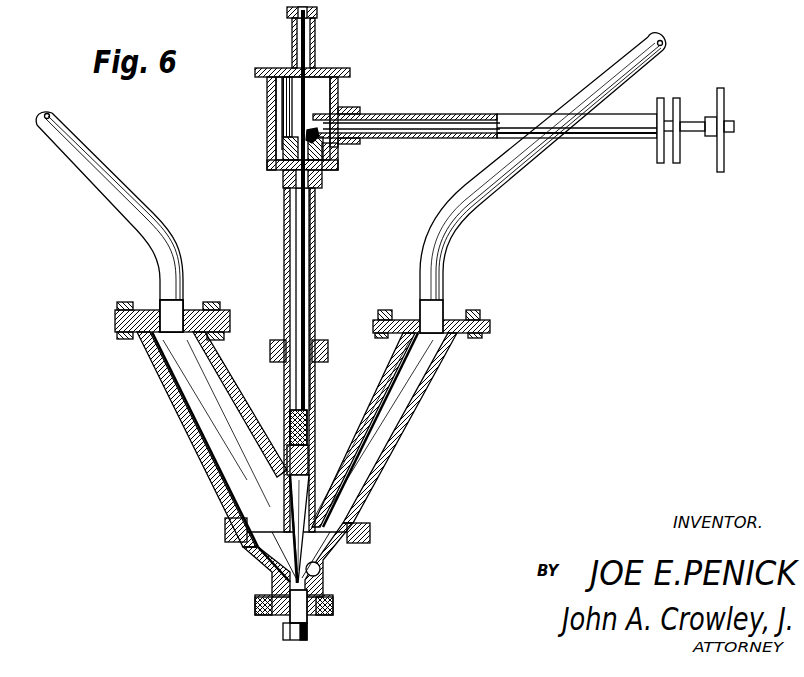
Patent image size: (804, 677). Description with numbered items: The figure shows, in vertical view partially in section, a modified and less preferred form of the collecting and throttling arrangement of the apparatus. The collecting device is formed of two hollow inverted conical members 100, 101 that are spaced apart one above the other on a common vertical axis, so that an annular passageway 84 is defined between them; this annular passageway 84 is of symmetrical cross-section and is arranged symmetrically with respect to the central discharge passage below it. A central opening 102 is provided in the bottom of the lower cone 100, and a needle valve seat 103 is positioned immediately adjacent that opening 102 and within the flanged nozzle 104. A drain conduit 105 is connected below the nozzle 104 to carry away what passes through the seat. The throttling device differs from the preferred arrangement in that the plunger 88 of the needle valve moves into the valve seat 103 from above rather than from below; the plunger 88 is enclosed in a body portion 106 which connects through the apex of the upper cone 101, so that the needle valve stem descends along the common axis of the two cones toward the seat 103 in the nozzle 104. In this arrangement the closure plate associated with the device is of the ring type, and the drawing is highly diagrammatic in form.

The annular passageway 84 is at (420, 388).
The plunger 88 is at (258, 555).
The hollow inverted conical member 100 is at (202, 455).
The upper cone 101 is at (258, 392).
The central opening 102 is at (287, 580).
The needle valve seat 103 is at (323, 572).
The flanged nozzle 104 is at (320, 588).
The drain conduit 105 is at (307, 632).
The body portion 106 is at (315, 390).